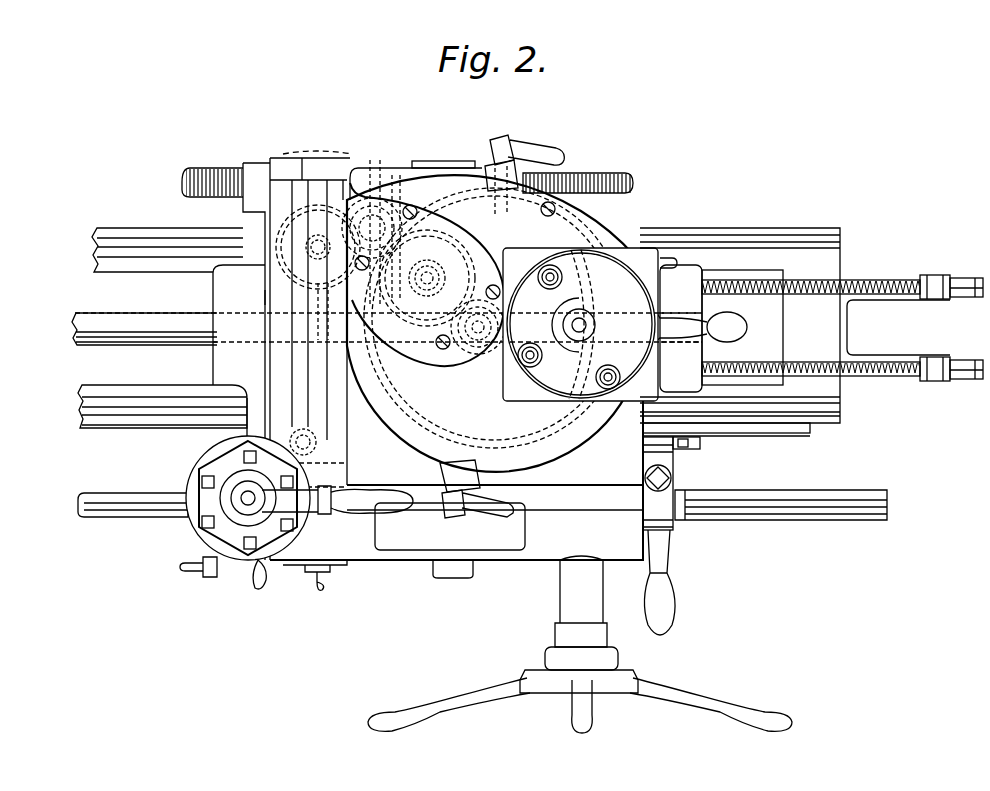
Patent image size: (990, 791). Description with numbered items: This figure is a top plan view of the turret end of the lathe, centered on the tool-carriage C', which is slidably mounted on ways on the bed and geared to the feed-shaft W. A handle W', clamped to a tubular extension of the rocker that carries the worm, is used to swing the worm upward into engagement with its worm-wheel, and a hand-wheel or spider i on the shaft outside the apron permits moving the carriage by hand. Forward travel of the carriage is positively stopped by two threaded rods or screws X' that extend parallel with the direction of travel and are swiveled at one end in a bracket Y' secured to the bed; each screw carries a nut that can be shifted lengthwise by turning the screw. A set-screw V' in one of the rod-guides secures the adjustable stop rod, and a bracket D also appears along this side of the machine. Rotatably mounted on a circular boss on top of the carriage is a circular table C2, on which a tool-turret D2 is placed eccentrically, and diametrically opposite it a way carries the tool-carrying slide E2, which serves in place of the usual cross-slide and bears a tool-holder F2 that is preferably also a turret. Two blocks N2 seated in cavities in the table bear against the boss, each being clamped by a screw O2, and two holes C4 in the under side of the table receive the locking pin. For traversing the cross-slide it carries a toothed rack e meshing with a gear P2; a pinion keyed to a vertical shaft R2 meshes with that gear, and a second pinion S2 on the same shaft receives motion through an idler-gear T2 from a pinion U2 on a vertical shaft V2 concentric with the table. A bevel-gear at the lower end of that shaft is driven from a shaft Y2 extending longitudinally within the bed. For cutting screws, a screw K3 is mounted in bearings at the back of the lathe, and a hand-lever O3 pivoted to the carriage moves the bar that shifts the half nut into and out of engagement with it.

The vertical shaft R2 is at (374, 215).
The second pinion S2 is at (395, 212).
The screw O2 is at (486, 165).
The holes C4 is at (553, 204).
The screw K3 is at (605, 178).
The blocks N2 is at (478, 207).
The idler-gear T2 is at (436, 284).
The gear P2 is at (290, 262).
The toothed rack e is at (268, 298).
The shaft Y2 is at (162, 318).
The threaded rods or screws X' is at (842, 333).
The bracket Y' is at (795, 325).
The tool-carrying slide E2 is at (215, 360).
The pinion U2 is at (468, 345).
The vertical shaft V2 is at (482, 346).
The tool-turret D2 is at (602, 324).
The circular table C2 is at (465, 323).
The set-screw V' is at (694, 453).
The bracket D is at (790, 434).
The feed-shaft W is at (482, 494).
The tool-holder F2 is at (210, 530).
The hand-lever O3 is at (250, 580).
The tool-carriage C' is at (456, 485).
The handle W' is at (675, 536).
The hand-wheel or spider i is at (540, 668).